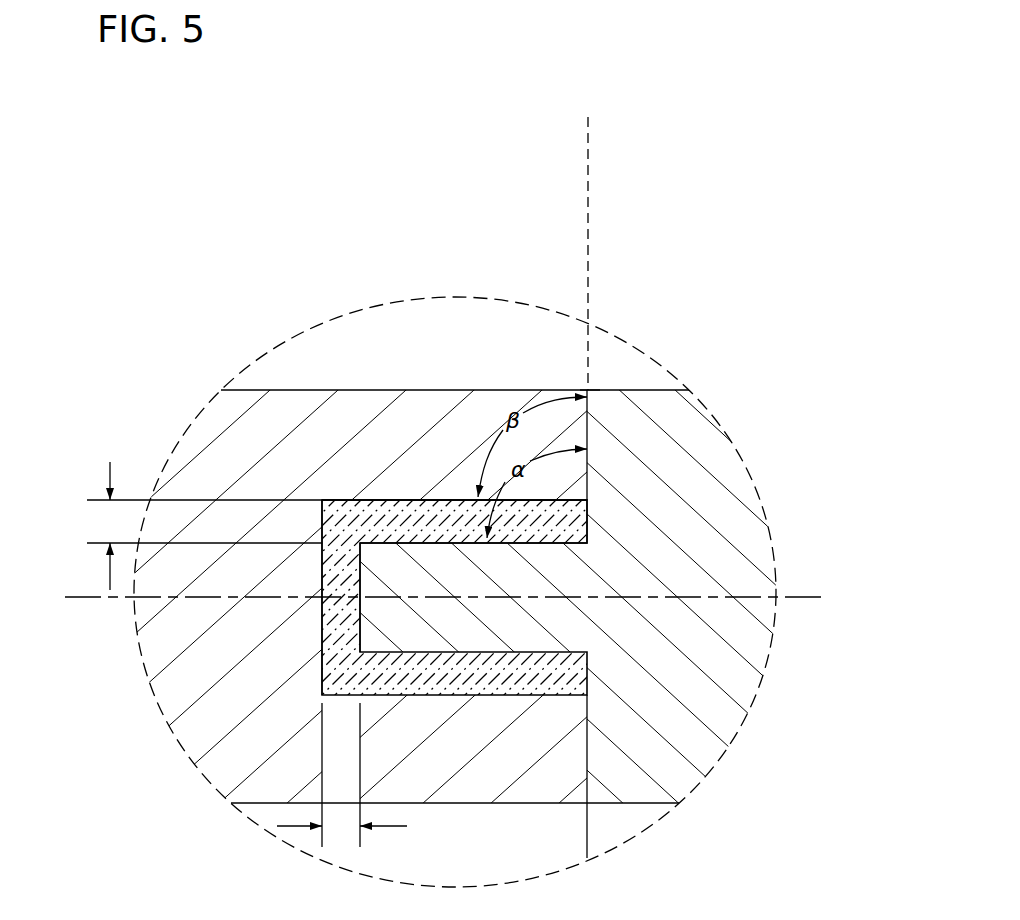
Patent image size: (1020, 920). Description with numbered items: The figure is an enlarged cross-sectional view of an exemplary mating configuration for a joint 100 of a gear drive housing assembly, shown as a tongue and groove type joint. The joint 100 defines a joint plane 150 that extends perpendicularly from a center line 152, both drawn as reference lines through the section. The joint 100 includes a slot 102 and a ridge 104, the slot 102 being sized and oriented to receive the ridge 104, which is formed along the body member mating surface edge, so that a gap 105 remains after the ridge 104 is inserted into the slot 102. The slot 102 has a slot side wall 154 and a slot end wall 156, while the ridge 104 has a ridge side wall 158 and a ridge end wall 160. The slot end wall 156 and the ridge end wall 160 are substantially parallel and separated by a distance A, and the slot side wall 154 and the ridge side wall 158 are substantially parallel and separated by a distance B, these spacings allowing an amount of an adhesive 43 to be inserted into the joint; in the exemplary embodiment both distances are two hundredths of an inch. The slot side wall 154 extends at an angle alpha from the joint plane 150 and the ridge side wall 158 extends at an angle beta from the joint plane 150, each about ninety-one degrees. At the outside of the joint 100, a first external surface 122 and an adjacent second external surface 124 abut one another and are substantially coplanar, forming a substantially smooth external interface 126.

The adhesive 43 is at (353, 660).
The joint 100 is at (586, 386).
The slot 102 is at (323, 568).
The ridge 104 is at (510, 577).
The gap 105 is at (418, 492).
The first external surface 122 is at (248, 390).
The second external surface 124 is at (645, 390).
The external interface 126 is at (592, 386).
The joint plane 150 is at (588, 148).
The center line 152 is at (822, 597).
The slot side wall 154 is at (357, 500).
The slot end wall 156 is at (322, 520).
The ridge side wall 158 is at (438, 543).
The ridge end wall 160 is at (360, 565).
The distance A is at (342, 775).
The distance B is at (110, 526).